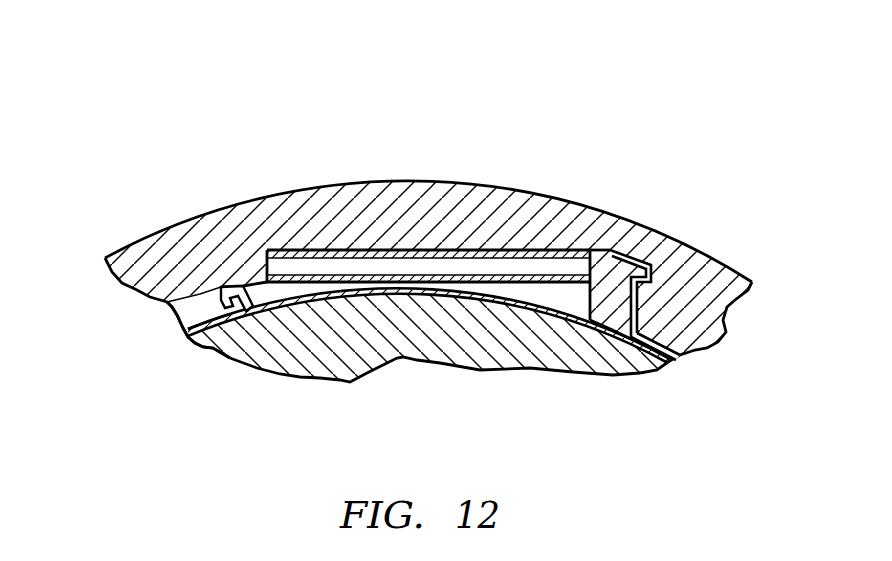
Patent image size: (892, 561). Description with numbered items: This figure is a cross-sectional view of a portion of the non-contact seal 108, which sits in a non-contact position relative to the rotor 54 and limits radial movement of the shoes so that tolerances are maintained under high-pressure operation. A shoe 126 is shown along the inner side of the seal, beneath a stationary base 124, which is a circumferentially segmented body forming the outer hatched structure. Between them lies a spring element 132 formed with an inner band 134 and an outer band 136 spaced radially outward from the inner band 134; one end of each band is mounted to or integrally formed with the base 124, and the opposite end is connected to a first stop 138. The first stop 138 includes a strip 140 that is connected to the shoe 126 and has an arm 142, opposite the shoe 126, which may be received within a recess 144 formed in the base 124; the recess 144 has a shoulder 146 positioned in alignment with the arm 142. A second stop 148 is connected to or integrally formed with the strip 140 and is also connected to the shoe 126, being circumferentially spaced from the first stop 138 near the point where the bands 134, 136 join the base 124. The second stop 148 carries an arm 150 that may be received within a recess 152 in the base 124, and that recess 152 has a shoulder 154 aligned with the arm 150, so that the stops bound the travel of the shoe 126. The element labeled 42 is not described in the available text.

The non-contact seal 108 is at (423, 237).
The stationary base 124 is at (158, 256).
The shoe 126 is at (200, 345).
The spring element 132 is at (437, 280).
The inner band 134 is at (317, 283).
The outer band 136 is at (433, 244).
The first stop 138 is at (612, 260).
The strip 140 is at (613, 313).
The arm 142 is at (651, 249).
The recess 144 is at (675, 268).
The shoulder 146 is at (652, 283).
The second stop 148 is at (238, 324).
The arm 150 is at (228, 288).
The recess 152 is at (162, 303).
The shoulder 154 is at (203, 307).
The body outline 42 is at (398, 358).
The rotor 54 is at (547, 348).